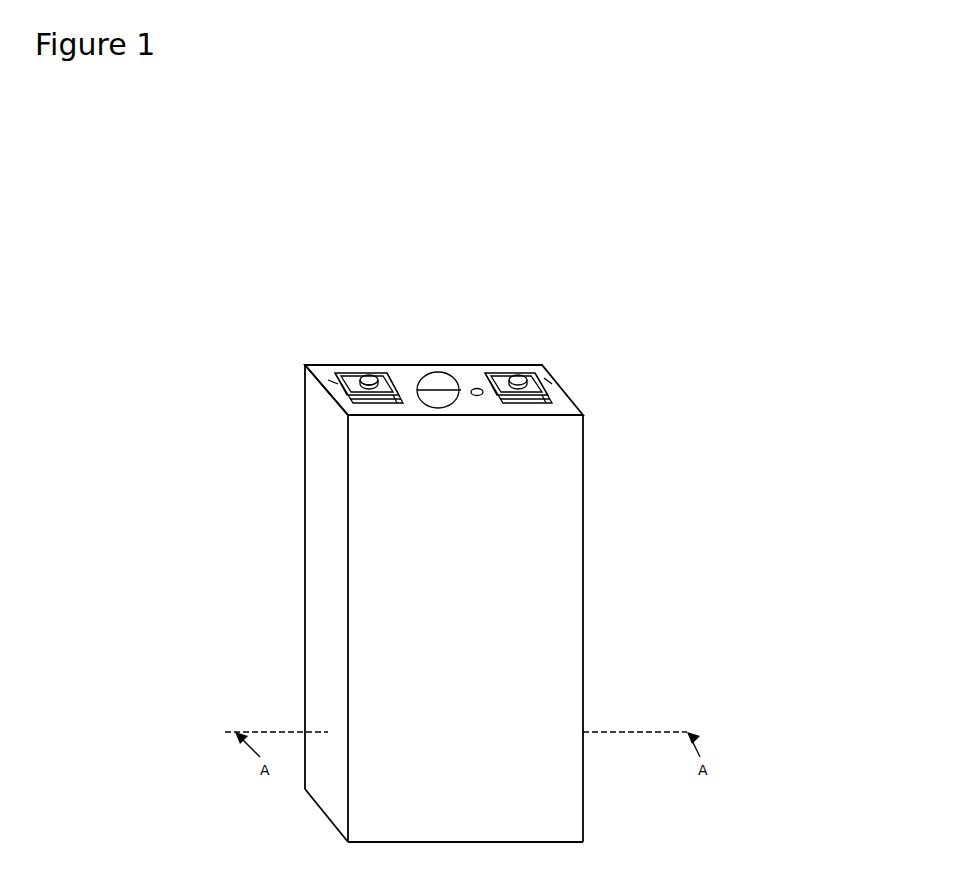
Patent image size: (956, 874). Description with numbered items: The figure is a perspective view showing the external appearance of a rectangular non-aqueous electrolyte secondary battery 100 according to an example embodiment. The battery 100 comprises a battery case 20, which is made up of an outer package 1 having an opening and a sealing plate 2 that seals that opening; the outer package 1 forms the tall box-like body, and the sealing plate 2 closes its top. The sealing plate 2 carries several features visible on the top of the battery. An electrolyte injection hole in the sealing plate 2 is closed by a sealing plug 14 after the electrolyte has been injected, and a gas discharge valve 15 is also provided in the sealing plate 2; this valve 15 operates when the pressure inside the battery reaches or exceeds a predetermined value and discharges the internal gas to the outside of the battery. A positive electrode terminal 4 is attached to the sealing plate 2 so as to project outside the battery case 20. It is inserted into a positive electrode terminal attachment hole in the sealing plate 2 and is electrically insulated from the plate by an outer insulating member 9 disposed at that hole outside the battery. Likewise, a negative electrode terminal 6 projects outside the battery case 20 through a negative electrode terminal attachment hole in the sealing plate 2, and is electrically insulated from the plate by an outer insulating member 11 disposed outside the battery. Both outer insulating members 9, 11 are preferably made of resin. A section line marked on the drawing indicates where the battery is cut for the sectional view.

The non-aqueous electrolyte secondary battery 100 is at (611, 260).
The outer package 1 is at (570, 802).
The sealing plate 2 is at (404, 378).
The positive electrode terminal 4 is at (369, 373).
The negative electrode terminal 6 is at (518, 375).
The outer insulating member 9 is at (333, 382).
The outer insulating member 11 is at (548, 381).
The sealing plug 14 is at (477, 389).
The gas discharge valve 15 is at (447, 388).
The battery case 20 is at (545, 363).